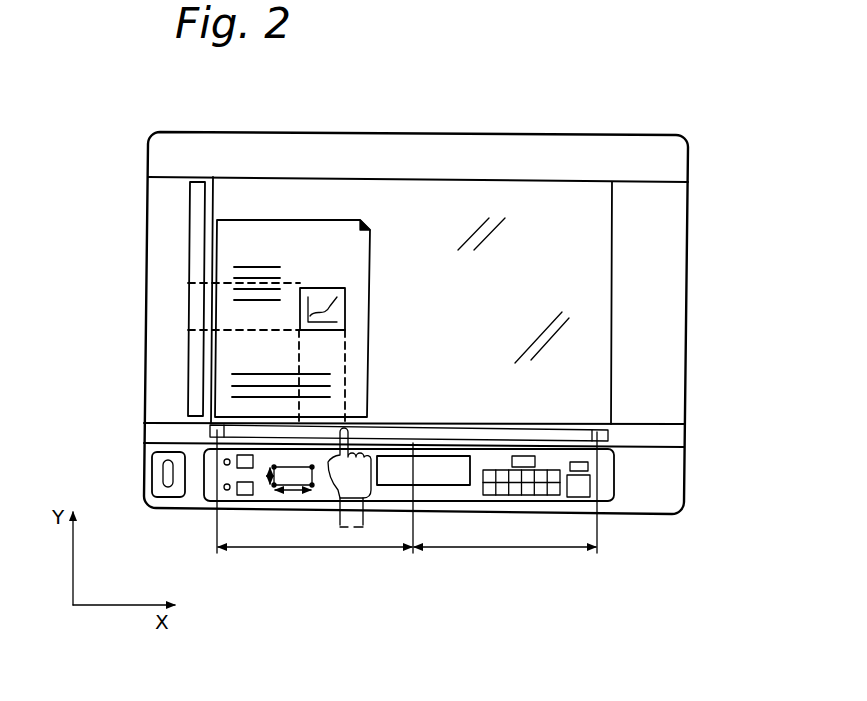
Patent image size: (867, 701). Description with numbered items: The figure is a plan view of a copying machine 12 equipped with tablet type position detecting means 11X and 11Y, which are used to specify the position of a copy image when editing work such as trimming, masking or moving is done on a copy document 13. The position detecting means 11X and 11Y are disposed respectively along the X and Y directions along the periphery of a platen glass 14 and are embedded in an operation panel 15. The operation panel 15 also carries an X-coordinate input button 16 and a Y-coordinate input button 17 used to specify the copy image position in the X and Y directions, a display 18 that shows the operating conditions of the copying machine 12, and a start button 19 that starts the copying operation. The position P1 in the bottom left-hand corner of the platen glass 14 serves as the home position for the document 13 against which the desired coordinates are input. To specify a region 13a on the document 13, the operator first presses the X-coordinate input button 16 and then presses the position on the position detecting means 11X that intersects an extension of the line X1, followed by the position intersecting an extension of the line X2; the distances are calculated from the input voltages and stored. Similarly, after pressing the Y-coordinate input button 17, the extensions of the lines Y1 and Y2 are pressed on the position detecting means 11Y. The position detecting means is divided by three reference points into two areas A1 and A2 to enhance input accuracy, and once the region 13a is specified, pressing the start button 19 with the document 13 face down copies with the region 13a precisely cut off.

The copying machine 12 is at (674, 111).
The copy document 13 is at (373, 252).
The region 13a is at (338, 313).
The platen glass 14 is at (597, 347).
The operation panel 15 is at (189, 514).
The X-coordinate input button 16 is at (230, 462).
The Y-coordinate input button 17 is at (228, 492).
The display 18 is at (433, 467).
The start button 19 is at (578, 491).
The tablet type position detecting means 11X is at (488, 435).
The tablet type position detecting means 11Y is at (192, 203).
The home position P1 is at (212, 432).
The line X1 is at (300, 302).
The line Y1 is at (325, 287).
The line X2 is at (345, 307).
The line Y2 is at (325, 332).
The area A1 is at (317, 548).
The area A2 is at (503, 548).